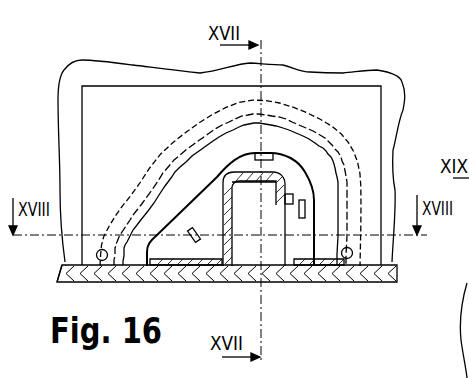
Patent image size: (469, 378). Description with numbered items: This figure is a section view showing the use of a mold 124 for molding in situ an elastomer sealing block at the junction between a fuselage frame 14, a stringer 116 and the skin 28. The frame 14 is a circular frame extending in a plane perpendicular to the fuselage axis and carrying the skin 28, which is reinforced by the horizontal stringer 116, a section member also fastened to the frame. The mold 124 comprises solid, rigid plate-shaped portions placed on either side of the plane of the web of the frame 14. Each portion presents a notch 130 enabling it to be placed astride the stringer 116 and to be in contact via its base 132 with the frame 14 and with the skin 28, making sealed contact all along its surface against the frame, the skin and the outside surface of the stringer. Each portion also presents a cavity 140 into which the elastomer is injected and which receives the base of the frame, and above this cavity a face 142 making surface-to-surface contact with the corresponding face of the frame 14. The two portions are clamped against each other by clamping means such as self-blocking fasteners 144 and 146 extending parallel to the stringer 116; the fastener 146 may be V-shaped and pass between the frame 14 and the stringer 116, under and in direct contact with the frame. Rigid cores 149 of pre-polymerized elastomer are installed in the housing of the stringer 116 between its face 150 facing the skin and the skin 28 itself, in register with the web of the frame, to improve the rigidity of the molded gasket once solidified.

The frame 14 is at (70, 266).
The skin 28 is at (333, 282).
The stringer 116 is at (203, 164).
The mold 124 is at (368, 117).
The notch 130 is at (228, 192).
The base 132 is at (370, 273).
The cavity 140 is at (217, 175).
The face 142 is at (123, 120).
The self-blocking fastener 144 is at (190, 228).
The self-blocking fastener 146 is at (271, 186).
The rigid core 149 is at (282, 182).
The face of the stringer 150 is at (251, 187).